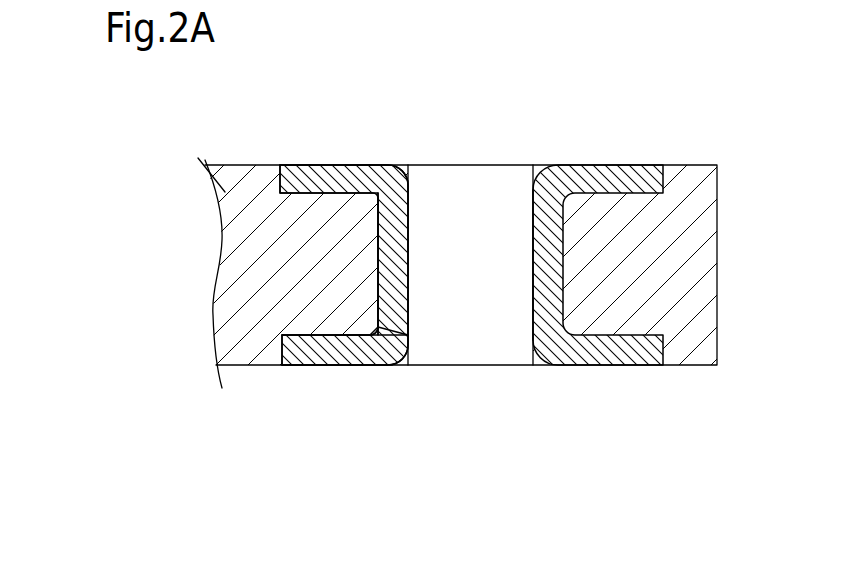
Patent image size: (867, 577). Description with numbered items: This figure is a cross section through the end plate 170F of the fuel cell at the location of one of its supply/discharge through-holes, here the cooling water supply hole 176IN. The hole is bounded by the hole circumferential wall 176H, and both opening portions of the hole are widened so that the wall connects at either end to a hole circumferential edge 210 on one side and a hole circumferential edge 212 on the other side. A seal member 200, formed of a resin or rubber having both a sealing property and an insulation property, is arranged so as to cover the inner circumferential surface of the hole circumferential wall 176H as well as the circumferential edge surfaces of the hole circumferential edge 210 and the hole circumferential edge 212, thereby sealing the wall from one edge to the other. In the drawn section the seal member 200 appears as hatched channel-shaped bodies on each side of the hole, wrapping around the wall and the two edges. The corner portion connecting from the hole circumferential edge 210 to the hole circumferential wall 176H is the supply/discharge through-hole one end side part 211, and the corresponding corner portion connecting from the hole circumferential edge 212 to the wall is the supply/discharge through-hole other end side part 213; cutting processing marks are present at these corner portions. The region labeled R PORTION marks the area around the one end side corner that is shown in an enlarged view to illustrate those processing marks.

The end plate 170F is at (205, 165).
The hole circumferential wall 176H is at (410, 268).
The cooling water supply hole 176IN is at (507, 267).
The seal member 200 is at (408, 224).
The hole circumferential edge 210 is at (341, 185).
The supply/discharge through-hole one end side part 211 is at (406, 177).
The hole circumferential edge 212 is at (329, 340).
The supply/discharge through-hole other end side part 213 is at (391, 350).
The R portion R PORTION is at (372, 331).